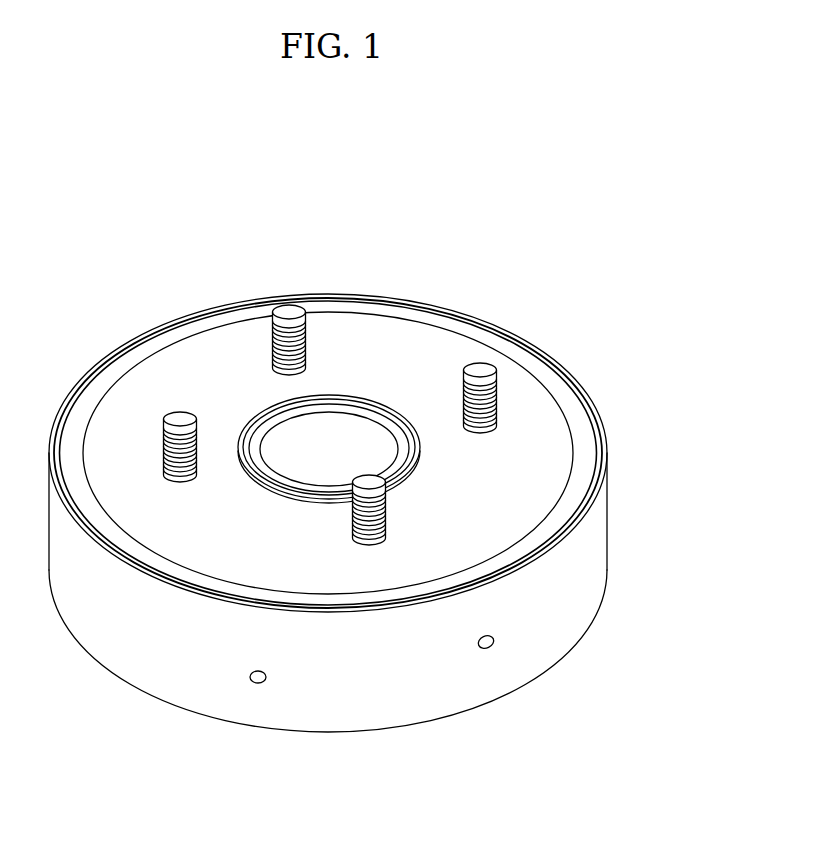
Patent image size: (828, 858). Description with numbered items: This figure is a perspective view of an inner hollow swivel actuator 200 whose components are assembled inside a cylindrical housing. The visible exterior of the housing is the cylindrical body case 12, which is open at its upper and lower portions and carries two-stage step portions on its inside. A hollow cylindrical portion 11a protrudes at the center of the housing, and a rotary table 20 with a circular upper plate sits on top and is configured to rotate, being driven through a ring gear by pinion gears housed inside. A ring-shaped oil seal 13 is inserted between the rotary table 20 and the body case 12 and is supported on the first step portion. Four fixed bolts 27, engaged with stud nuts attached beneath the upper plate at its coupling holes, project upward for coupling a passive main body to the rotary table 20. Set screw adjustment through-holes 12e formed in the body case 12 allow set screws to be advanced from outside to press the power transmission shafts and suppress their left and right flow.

The inner hollow swivel actuator 200 is at (687, 210).
The fixed bolt 27 is at (478, 366).
The ring-shaped oil seal 13 is at (563, 388).
The rotary table 20 is at (538, 447).
The body case 12 is at (598, 537).
The hollow cylindrical portion 11a is at (400, 459).
The set screw adjustment through-hole 12e is at (258, 684).